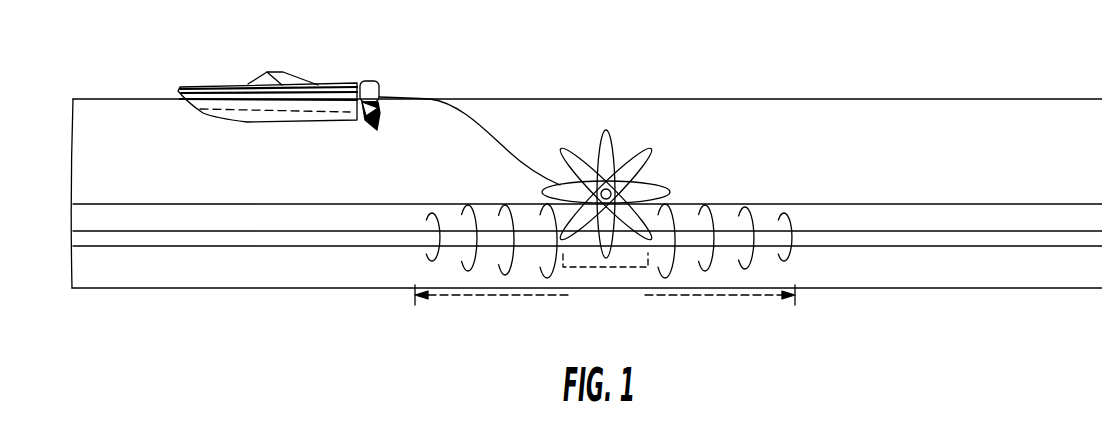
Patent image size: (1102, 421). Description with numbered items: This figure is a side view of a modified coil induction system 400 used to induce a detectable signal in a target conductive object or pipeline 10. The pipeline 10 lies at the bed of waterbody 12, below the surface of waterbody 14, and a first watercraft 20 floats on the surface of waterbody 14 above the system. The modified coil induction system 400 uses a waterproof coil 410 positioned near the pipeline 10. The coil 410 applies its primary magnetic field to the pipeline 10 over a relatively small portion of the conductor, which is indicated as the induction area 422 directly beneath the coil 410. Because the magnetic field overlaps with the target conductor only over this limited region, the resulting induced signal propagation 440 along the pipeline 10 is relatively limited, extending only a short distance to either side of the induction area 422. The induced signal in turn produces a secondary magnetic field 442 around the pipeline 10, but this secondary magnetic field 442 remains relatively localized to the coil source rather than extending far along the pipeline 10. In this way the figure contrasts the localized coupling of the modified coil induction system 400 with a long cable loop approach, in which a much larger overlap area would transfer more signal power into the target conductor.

The target conductive object or pipeline 10 is at (972, 246).
The bed of waterbody 12 is at (995, 204).
The surface of waterbody 14 is at (1009, 99).
The first watercraft 20 is at (322, 82).
The modified coil induction system 400 is at (735, 84).
The waterproof coil 410 is at (605, 124).
The induction area (primary magnetic field) 422 is at (605, 267).
The induced signal propagation 440 is at (518, 298).
The secondary magnetic field 442 is at (467, 205).